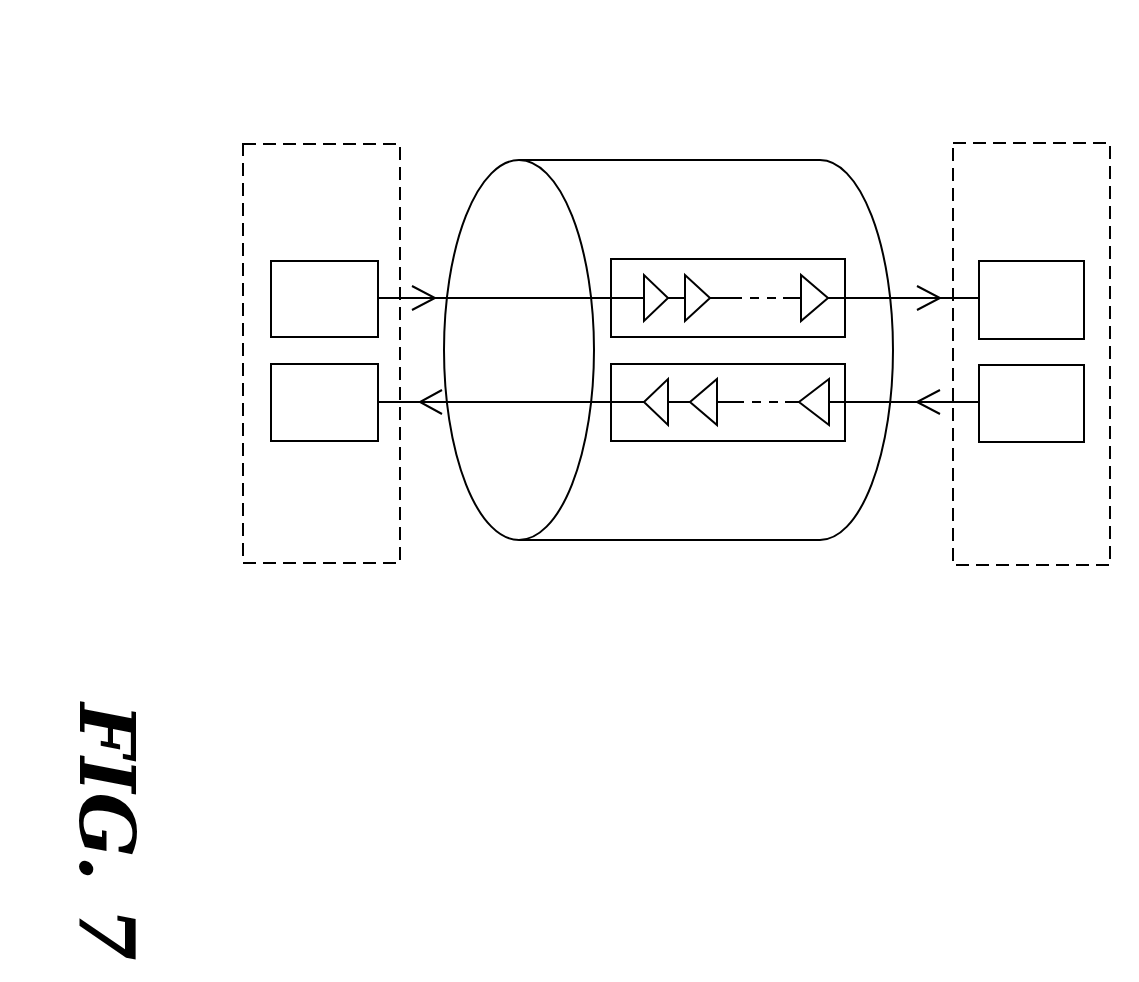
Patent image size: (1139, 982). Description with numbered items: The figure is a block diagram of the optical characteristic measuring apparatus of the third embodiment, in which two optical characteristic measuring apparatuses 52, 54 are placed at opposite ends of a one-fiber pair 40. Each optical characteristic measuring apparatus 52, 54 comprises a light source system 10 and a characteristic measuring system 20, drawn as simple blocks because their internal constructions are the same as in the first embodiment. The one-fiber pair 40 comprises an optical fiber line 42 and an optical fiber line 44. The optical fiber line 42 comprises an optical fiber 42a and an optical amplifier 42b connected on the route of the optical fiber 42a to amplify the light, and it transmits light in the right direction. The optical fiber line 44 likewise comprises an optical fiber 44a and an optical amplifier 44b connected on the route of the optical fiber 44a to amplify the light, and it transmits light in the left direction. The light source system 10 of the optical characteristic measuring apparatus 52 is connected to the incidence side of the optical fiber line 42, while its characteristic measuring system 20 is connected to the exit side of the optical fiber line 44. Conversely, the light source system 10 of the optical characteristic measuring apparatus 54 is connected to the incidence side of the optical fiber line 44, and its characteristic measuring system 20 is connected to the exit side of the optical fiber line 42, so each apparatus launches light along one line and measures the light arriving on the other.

The light source system 10 is at (300, 261).
The characteristic measuring system 20 is at (347, 441).
The one-fiber pair 40 is at (680, 160).
The optical fiber line 42 is at (728, 257).
The optical fiber 42a is at (676, 297).
The optical amplifier 42b is at (651, 278).
The optical fiber line 44 is at (719, 450).
The optical fiber 44a is at (729, 404).
The optical amplifier 44b is at (657, 415).
The optical characteristic measuring apparatus 52 is at (337, 563).
The optical characteristic measuring apparatus 54 is at (1050, 565).